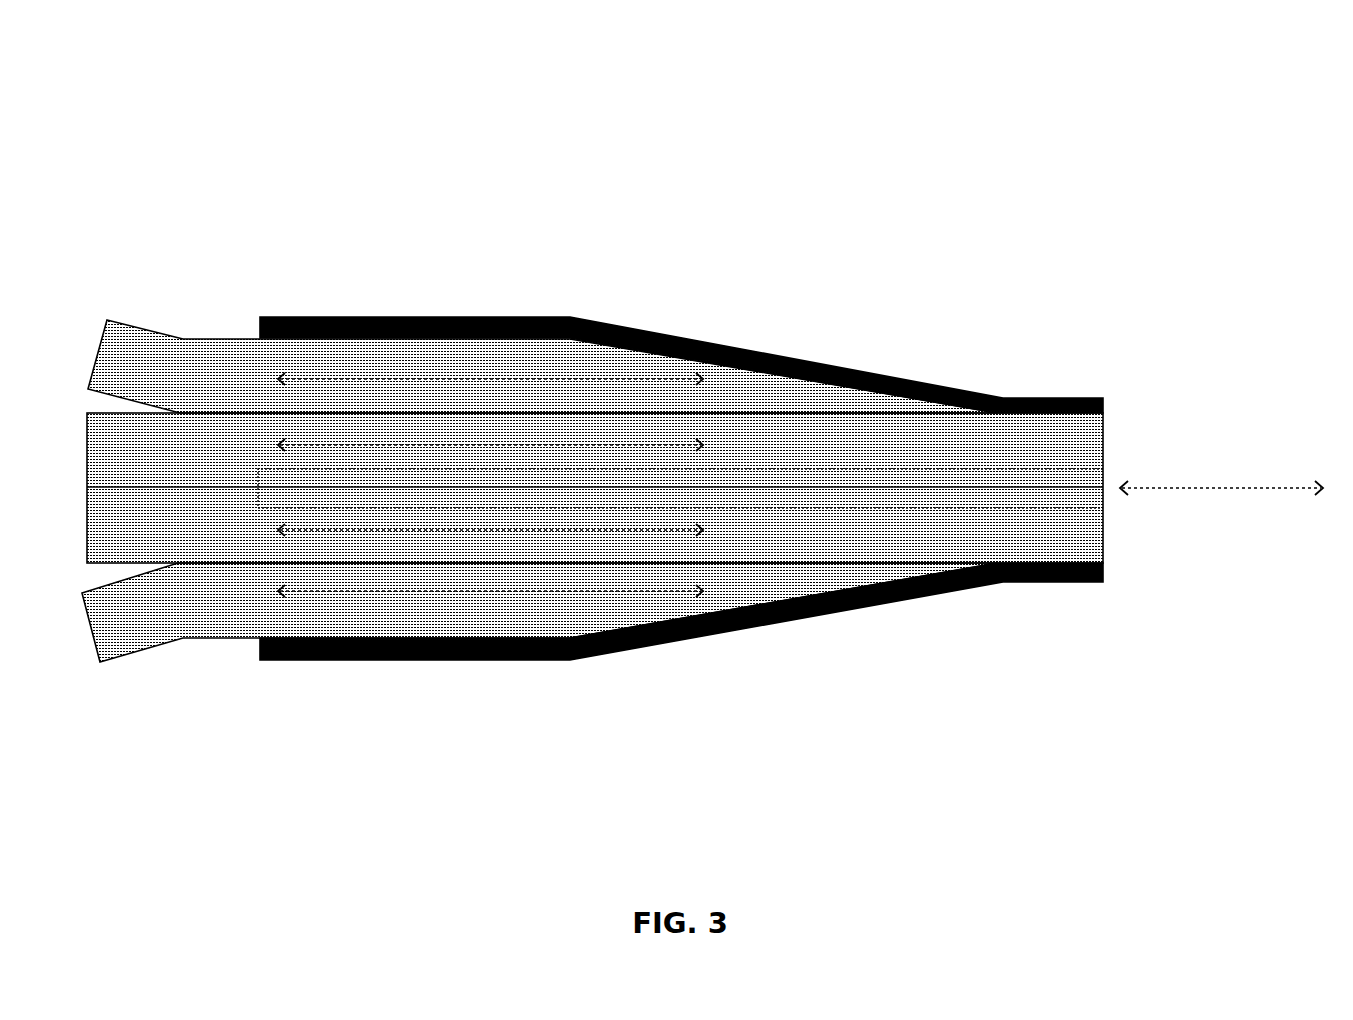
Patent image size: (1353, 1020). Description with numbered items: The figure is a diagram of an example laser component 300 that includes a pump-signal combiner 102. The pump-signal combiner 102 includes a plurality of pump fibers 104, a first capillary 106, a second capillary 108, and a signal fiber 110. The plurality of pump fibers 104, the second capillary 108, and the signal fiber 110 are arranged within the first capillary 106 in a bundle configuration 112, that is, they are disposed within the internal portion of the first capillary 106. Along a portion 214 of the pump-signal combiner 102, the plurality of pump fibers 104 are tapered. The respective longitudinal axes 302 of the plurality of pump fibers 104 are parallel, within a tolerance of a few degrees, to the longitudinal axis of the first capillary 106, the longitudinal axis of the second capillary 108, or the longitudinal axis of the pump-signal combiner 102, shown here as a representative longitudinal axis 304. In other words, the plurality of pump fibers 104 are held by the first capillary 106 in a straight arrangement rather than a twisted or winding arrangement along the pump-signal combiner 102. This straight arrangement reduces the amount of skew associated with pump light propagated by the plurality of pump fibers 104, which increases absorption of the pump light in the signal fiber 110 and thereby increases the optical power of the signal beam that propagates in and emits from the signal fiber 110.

The laser component 300 is at (190, 39).
The pump-signal combiner 102 is at (1103, 107).
The plurality of pump fibers 104 is at (427, 697).
The first capillary 106 is at (1028, 563).
The second capillary 108 is at (595, 572).
The signal fiber 110 is at (948, 523).
The bundle configuration 112 is at (1103, 743).
The portion 214 is at (560, 290).
The longitudinal axes 302 is at (343, 590).
The longitudinal axis 304 is at (1221, 465).